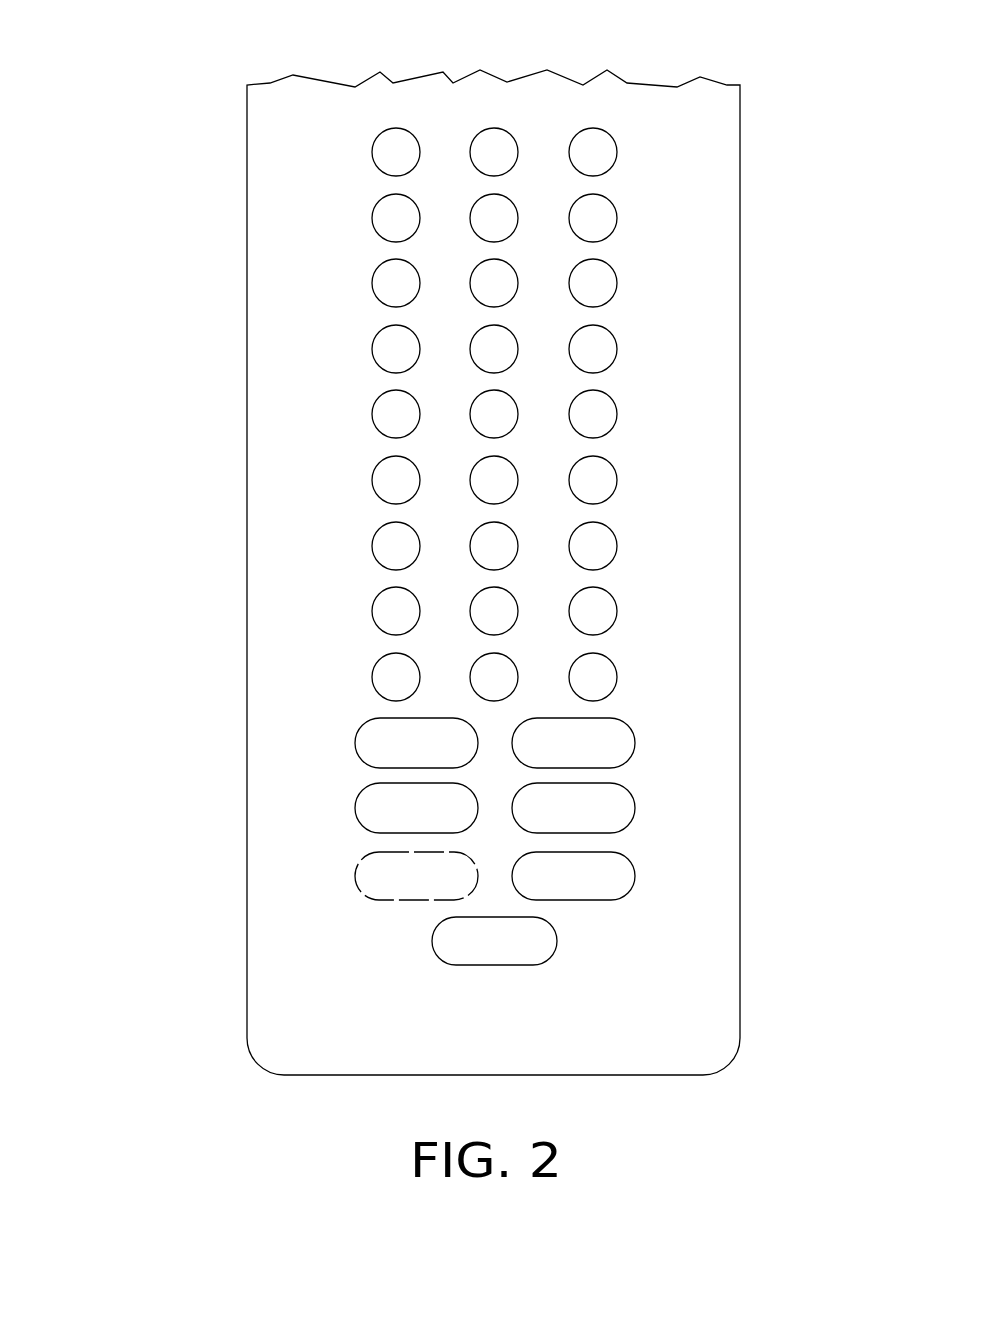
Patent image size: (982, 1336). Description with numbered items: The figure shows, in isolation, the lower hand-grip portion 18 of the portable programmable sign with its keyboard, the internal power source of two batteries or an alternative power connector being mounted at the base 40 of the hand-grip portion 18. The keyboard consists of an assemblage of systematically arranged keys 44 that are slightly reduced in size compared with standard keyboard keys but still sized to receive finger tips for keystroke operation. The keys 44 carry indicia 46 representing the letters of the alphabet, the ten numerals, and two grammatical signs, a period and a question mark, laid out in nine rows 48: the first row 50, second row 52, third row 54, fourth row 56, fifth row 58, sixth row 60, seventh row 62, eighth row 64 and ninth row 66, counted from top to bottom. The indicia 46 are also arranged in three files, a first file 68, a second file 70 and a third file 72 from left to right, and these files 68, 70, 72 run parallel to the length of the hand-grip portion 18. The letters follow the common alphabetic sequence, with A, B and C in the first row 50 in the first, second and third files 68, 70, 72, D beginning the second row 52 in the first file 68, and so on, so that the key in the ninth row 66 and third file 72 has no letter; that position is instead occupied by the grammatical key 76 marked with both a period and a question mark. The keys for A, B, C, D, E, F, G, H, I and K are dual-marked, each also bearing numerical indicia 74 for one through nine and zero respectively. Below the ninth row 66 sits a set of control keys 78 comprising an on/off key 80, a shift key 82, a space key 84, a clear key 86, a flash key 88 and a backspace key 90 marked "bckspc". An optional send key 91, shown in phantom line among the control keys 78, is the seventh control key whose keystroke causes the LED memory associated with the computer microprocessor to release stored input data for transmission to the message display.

The hand-grip portion 18 is at (112, 483).
The base 40 is at (618, 1077).
The keys 44 is at (142, 128).
The indicia 46 is at (229, 128).
The rows 48 is at (820, 123).
The first row 50 is at (757, 126).
The second row 52 is at (757, 192).
The third row 54 is at (757, 257).
The fourth row 56 is at (757, 323).
The fifth row 58 is at (757, 388).
The sixth row 60 is at (757, 454).
The seventh row 62 is at (757, 520).
The eighth row 64 is at (757, 585).
The ninth row 66 is at (757, 651).
The first file 68 is at (418, 53).
The second file 70 is at (518, 53).
The third file 72 is at (616, 53).
The numerical indicia 74 is at (411, 132).
The grammatical key 76 is at (608, 657).
The control keys 78 is at (230, 720).
The on/off key 80 is at (493, 965).
The shift key 82 is at (368, 721).
The space key 84 is at (624, 721).
The clear key 86 is at (368, 786).
The flash key 88 is at (624, 786).
The backspace key 90 is at (623, 853).
The send key 91 is at (368, 854).